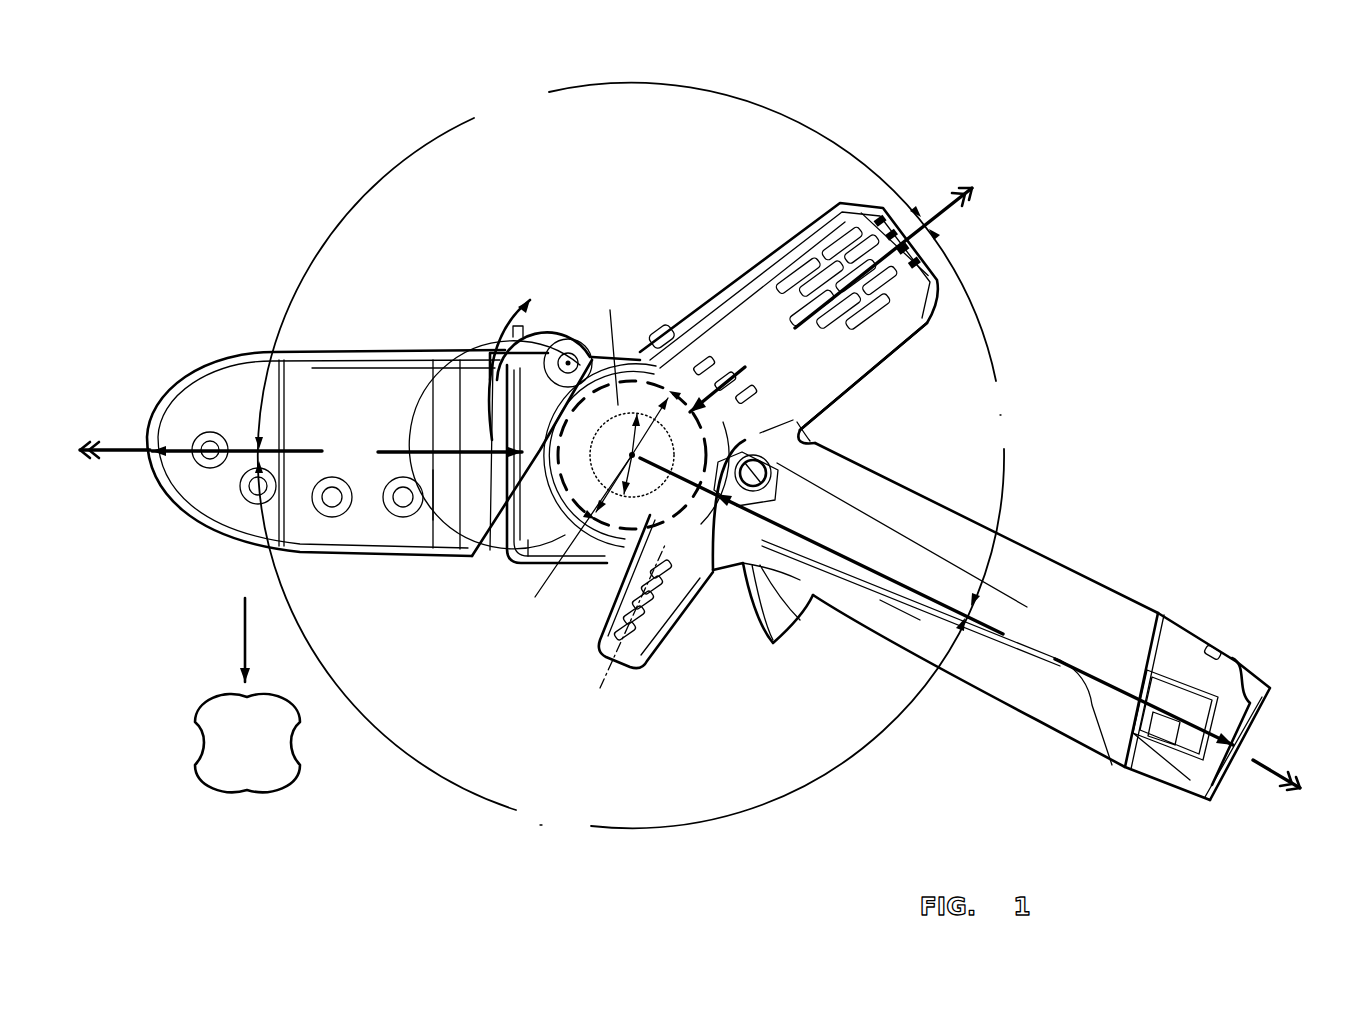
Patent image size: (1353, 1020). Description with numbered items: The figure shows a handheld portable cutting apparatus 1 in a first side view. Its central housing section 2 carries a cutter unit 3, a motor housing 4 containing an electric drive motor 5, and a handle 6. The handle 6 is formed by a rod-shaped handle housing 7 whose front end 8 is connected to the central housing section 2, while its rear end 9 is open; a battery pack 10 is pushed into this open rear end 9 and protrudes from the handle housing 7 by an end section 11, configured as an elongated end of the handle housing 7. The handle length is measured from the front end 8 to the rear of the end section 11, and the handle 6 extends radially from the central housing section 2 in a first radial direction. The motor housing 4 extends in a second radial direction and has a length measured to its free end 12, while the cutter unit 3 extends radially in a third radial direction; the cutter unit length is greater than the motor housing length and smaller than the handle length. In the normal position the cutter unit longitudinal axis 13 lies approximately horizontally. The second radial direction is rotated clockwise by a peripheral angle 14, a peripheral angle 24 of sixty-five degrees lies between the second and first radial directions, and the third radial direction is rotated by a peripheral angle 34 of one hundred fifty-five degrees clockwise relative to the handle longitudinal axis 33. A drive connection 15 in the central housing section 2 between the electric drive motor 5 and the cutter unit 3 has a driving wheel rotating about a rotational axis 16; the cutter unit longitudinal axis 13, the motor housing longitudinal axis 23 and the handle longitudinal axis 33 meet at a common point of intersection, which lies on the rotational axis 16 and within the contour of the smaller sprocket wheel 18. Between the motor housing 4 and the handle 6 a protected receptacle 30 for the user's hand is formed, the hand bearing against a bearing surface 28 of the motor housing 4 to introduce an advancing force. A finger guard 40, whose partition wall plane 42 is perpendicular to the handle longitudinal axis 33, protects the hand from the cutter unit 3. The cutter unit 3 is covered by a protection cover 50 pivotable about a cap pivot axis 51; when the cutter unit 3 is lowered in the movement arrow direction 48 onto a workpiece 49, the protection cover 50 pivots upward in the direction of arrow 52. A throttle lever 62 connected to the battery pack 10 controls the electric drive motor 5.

The cutting apparatus 1 is at (1050, 440).
The central housing section 2 is at (510, 550).
The cutter unit 3 is at (205, 366).
The motor housing 4 is at (717, 323).
The electric drive motor 5 is at (822, 253).
The handle 6 is at (1035, 578).
The handle housing 7 is at (1100, 577).
The front end 8 is at (780, 463).
The rear end 9 is at (1133, 640).
The battery pack 10 is at (1203, 670).
The end section 11 is at (1260, 690).
The free end 12 is at (928, 270).
The cutter unit longitudinal axis 13 is at (430, 462).
The peripheral angle 14 is at (629, 456).
The drive connection 15 is at (1318, 507).
The rotational axis 16 is at (660, 517).
The sprocket wheel 18 is at (647, 402).
The motor housing longitudinal axis 23 is at (790, 330).
The peripheral angle 24 is at (1002, 416).
The bearing surface 28 is at (885, 366).
The protected receptacle 30 is at (821, 427).
The handle longitudinal axis 33 is at (900, 585).
The peripheral angle 34 is at (551, 821).
The finger guard 40 is at (634, 660).
The partition wall plane 42 is at (613, 655).
The movement arrow direction 48 is at (247, 625).
The workpiece 49 is at (247, 743).
The protection cover 50 is at (355, 403).
The cap pivot axis 51 is at (568, 353).
The direction of arrow 52 is at (503, 337).
The throttle lever 62 is at (772, 628).